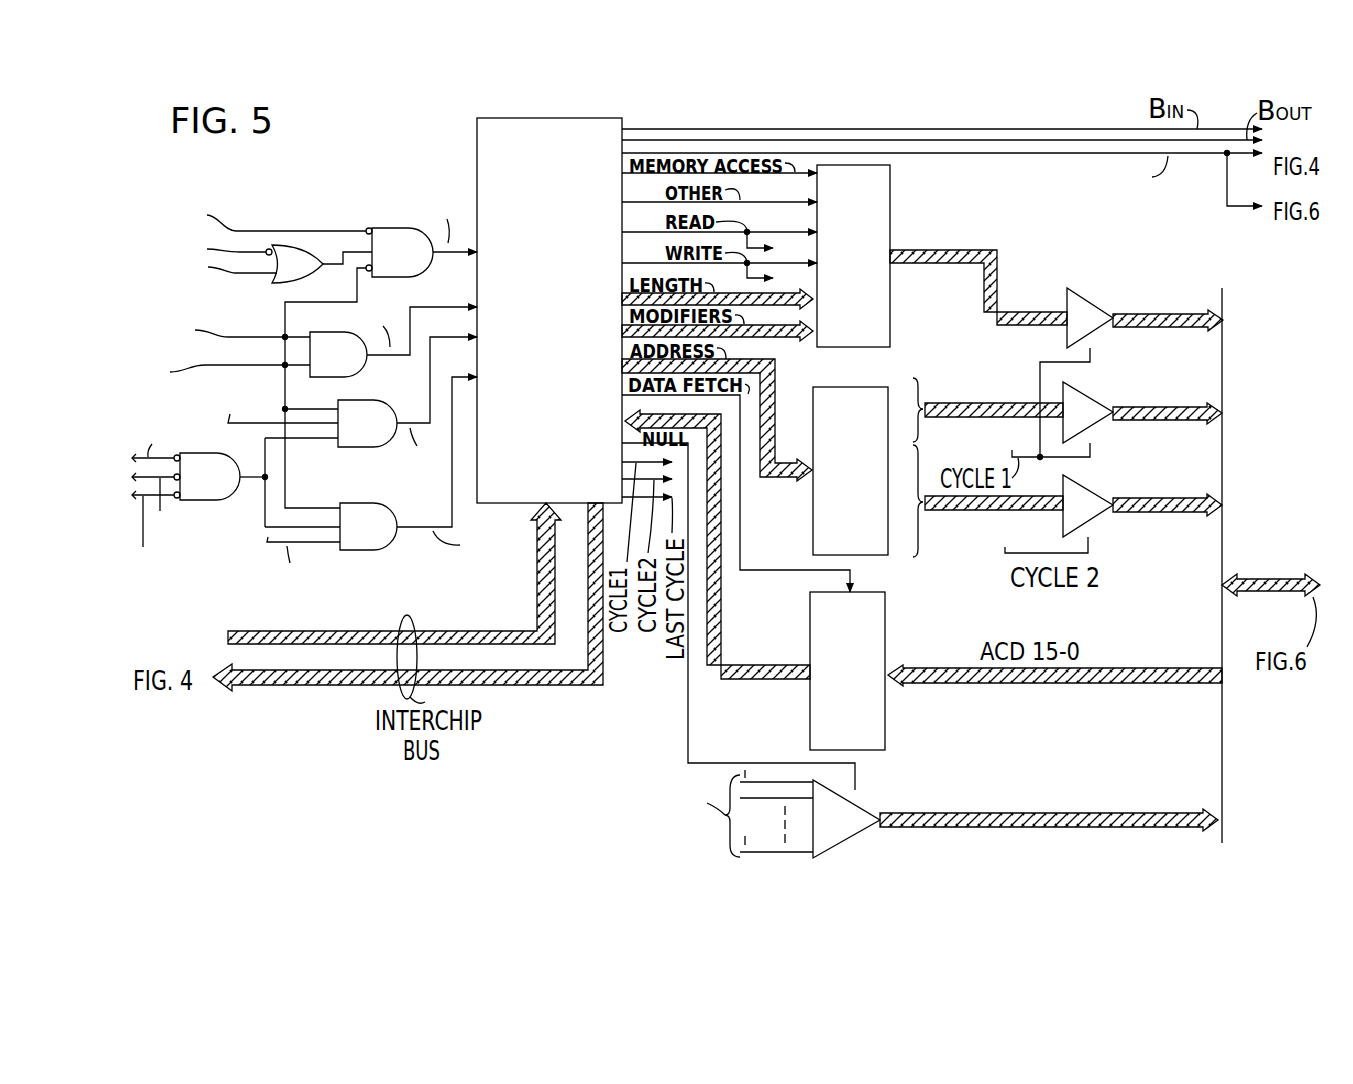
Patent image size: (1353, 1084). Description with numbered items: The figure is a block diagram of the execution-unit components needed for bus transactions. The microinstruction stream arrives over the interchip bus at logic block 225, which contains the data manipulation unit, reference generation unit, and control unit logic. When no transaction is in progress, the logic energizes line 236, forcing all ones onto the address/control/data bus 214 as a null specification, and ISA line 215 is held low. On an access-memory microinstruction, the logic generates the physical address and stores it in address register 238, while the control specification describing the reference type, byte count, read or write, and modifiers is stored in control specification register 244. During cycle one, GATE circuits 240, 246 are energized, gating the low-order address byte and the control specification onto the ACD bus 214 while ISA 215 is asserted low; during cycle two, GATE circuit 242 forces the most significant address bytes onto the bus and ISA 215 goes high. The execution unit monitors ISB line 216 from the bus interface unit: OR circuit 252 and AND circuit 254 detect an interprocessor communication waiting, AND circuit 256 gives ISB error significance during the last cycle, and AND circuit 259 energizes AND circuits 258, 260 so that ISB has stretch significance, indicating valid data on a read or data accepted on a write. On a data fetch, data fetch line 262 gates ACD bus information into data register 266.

The address/control/data bus 214 is at (1260, 595).
The simplex line (ISA) 215 is at (1055, 156).
The simplex line (ISB) 216 is at (293, 230).
The logic block 225 is at (569, 397).
The null specification line 236 is at (755, 762).
The address register 238 is at (813, 521).
The GATE circuit 240 is at (1100, 425).
The GATE circuit 242 is at (1098, 518).
The control specification register 244 is at (873, 351).
The GATE circuit 246 is at (1103, 328).
The OR circuit 252 is at (277, 286).
The AND circuit 254 is at (419, 265).
The AND circuit 256 is at (356, 367).
The AND circuit 258 is at (385, 436).
The AND circuit 259 is at (227, 489).
The AND circuit 260 is at (387, 540).
The data fetch line 262 is at (786, 572).
The data register 266 is at (887, 732).